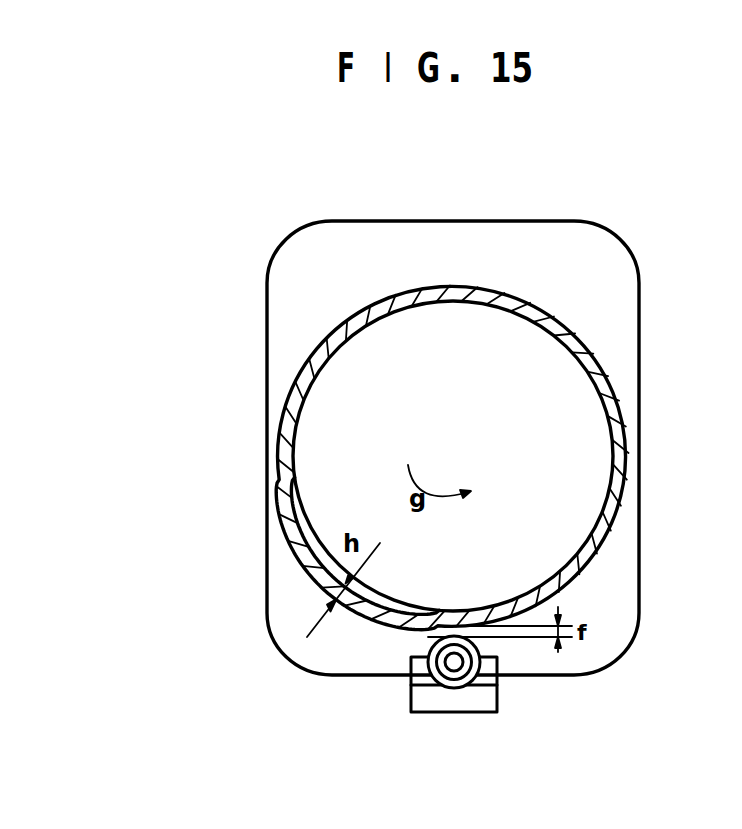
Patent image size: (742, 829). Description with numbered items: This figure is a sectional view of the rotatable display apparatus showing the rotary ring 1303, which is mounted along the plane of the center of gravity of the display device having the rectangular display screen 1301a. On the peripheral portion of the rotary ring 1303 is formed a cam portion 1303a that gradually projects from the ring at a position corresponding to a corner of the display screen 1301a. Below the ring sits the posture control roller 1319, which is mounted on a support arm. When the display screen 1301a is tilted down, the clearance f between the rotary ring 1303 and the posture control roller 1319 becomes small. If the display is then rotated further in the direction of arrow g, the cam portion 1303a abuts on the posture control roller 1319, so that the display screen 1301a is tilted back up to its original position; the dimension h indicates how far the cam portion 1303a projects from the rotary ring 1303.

The display screen 1301a is at (407, 221).
The rotary ring 1303 is at (563, 327).
The cam portion 1303a is at (318, 578).
The posture control roller 1319 is at (457, 678).